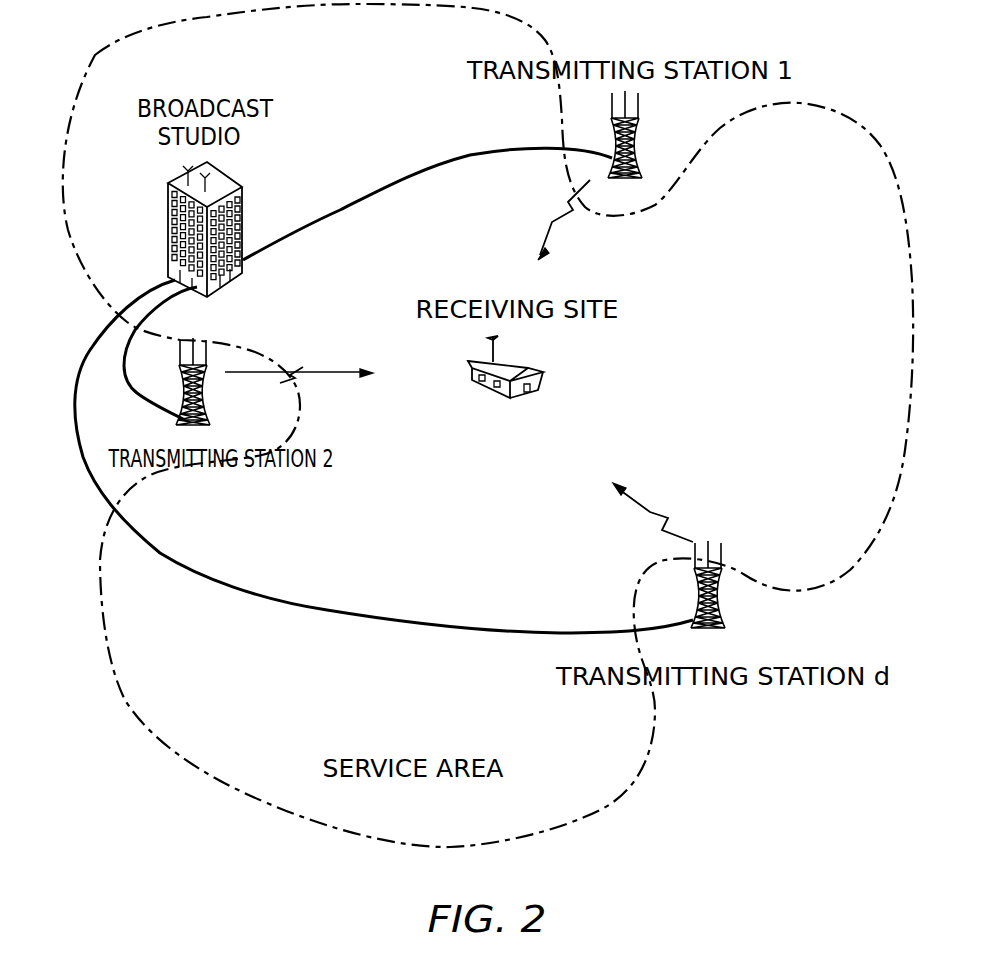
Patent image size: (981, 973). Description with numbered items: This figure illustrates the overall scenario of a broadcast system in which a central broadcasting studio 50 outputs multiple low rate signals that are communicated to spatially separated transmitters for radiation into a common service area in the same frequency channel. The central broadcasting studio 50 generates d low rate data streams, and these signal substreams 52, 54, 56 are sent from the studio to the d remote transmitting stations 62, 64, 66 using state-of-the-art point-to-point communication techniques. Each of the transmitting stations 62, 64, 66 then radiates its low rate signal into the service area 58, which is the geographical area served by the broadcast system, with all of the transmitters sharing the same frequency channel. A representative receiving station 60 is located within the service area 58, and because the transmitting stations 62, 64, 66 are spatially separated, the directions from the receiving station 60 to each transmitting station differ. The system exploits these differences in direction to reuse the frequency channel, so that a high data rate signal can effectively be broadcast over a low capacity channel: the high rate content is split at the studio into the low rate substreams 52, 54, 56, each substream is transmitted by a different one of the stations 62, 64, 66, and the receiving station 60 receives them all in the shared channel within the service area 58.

The central broadcasting studio 50 is at (243, 197).
The signal substream 52 is at (437, 170).
The signal substream 54 is at (136, 396).
The signal substream 56 is at (437, 628).
The service area 58 is at (605, 806).
The receiving station 60 is at (520, 396).
The transmitting station 62 is at (637, 128).
The transmitting station 64 is at (205, 410).
The transmitting station 66 is at (722, 613).